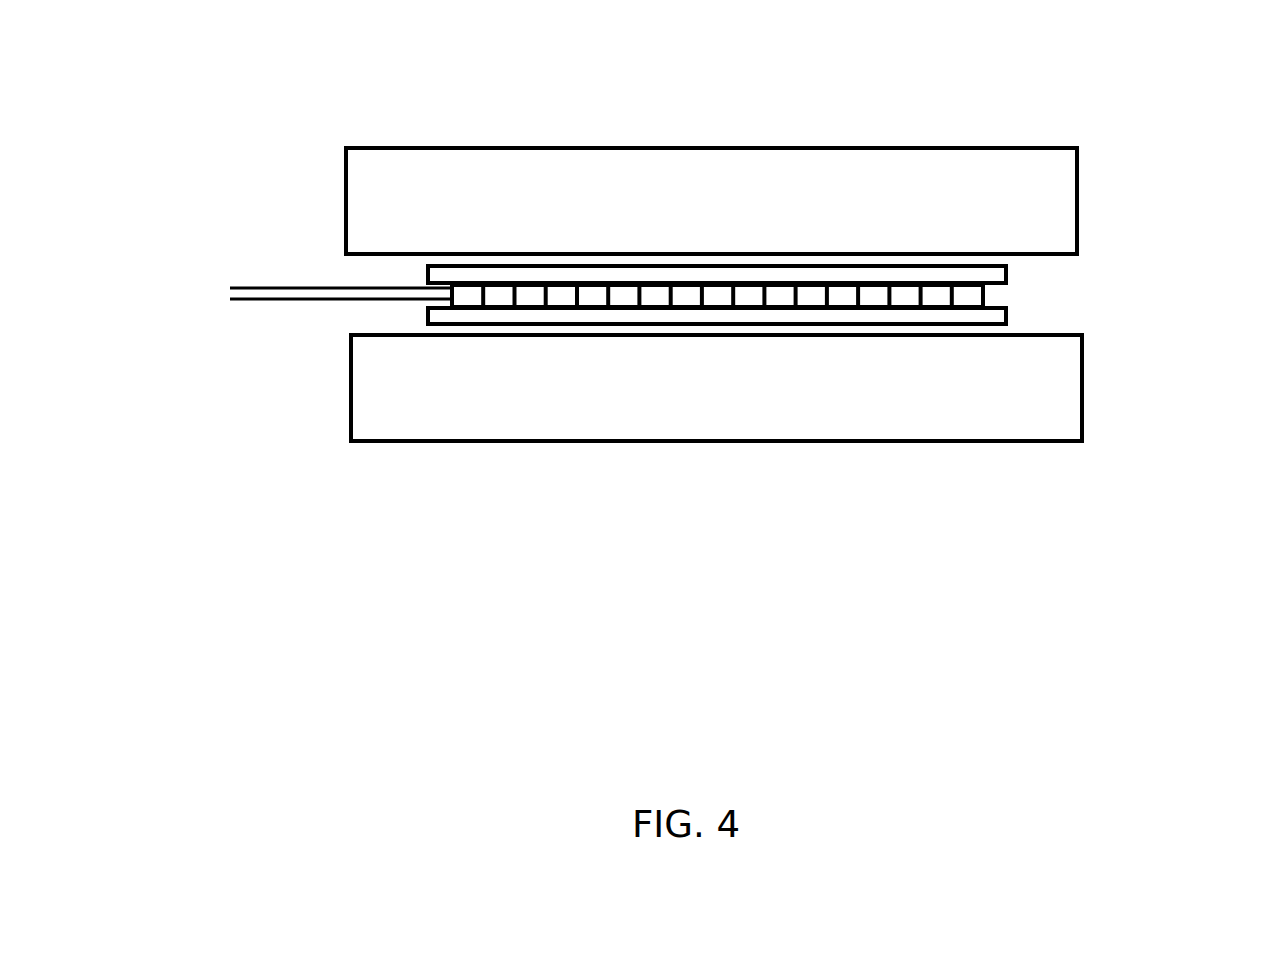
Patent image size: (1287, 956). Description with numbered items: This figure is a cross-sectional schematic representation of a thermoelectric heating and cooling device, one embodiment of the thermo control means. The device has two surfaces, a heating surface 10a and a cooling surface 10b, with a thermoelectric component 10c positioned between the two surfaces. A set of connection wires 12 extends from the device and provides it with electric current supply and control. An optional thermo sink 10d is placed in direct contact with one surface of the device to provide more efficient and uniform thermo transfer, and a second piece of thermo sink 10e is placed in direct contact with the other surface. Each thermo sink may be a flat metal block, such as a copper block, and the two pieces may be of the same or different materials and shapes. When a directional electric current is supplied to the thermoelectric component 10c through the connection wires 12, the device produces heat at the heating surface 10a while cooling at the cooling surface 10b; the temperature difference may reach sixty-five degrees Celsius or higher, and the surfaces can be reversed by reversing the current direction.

The thermo sink 10d is at (1080, 203).
The second piece of thermo sink 10e is at (1083, 389).
The heating surface 10a is at (1006, 278).
The cooling surface 10b is at (1006, 317).
The thermoelectric component 10c is at (983, 297).
The set of connection wires 12 is at (260, 300).